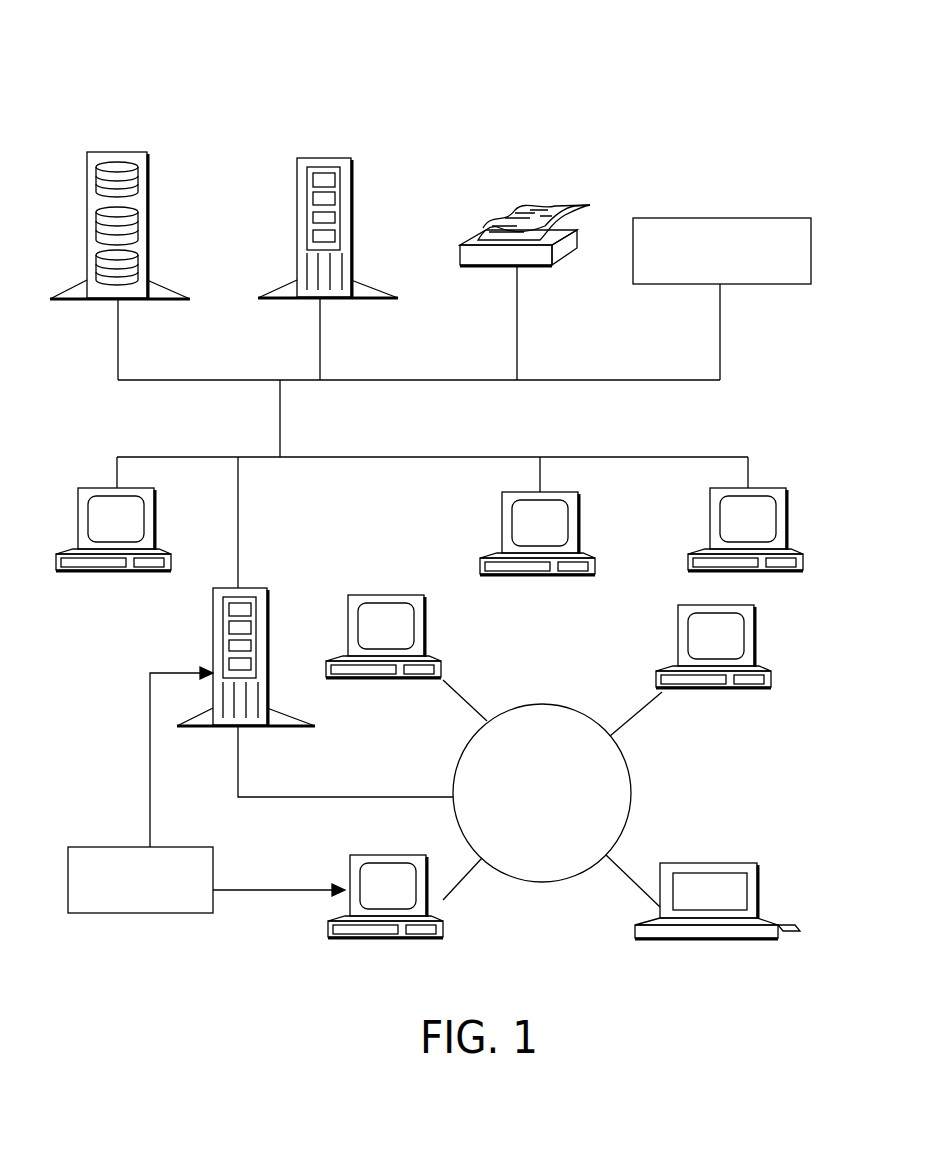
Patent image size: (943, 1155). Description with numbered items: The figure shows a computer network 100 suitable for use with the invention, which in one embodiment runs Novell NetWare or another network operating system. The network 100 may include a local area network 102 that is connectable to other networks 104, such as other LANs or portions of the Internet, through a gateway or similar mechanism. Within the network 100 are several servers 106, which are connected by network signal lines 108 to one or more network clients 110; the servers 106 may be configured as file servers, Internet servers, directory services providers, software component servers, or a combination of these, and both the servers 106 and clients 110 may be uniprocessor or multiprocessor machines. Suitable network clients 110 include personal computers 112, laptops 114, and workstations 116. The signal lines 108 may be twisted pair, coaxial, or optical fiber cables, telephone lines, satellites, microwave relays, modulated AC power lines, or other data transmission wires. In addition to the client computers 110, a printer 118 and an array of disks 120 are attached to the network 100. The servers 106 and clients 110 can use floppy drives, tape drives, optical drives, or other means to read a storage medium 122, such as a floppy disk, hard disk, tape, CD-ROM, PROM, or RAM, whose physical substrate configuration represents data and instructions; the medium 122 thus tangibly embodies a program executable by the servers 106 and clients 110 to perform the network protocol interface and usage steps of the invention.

The computer network 100 is at (479, 471).
The local area network 102 is at (464, 395).
The other networks 104 is at (737, 261).
The server 106 is at (320, 437).
The network signal lines 108 is at (307, 522).
The network client 110 is at (617, 688).
The personal computer 112 is at (448, 644).
The laptop 114 is at (731, 875).
The workstation 116 is at (798, 504).
The printer 118 is at (567, 248).
The array of disks 120 is at (151, 199).
The storage medium 122 is at (206, 790).